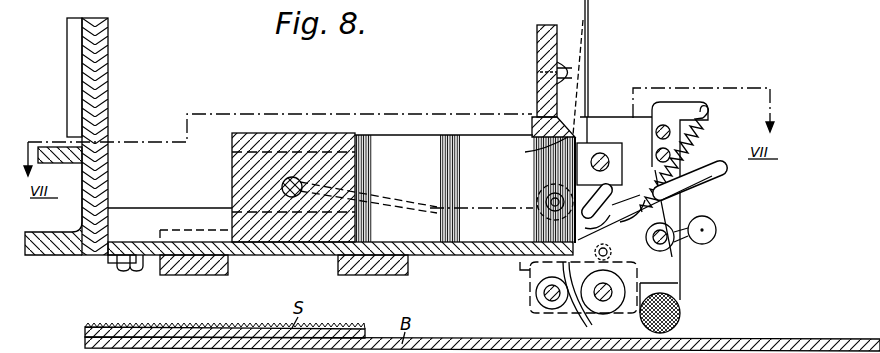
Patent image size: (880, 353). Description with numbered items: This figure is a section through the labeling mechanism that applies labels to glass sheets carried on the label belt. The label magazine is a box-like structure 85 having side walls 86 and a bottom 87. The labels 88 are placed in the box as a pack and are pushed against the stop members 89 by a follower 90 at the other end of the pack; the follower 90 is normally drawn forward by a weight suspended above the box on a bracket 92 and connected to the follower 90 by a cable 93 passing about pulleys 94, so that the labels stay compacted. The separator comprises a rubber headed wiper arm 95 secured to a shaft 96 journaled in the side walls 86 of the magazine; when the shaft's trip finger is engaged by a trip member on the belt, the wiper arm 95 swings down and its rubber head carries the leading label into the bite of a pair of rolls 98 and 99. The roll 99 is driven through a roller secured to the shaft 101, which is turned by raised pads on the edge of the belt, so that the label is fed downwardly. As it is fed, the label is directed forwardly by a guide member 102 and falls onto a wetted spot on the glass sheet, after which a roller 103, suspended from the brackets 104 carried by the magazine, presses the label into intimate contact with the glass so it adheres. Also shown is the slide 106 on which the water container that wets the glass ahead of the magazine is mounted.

The box-like structure 85 is at (121, 209).
The side walls 86 is at (181, 209).
The bottom 87 is at (287, 251).
The labels 88 is at (477, 150).
The stop members 89 is at (540, 152).
The follower 90 is at (292, 133).
The bracket 92 is at (540, 41).
The cable 93 is at (590, 17).
The pulleys 94 is at (540, 198).
The wiper arm 95 is at (614, 151).
The shaft 96 is at (649, 209).
The roll 98 is at (538, 282).
The roll 99 is at (583, 293).
The shaft 101 is at (605, 262).
The guide member 102 is at (585, 317).
The roller 103 is at (682, 320).
The brackets 104 is at (670, 294).
The slide 106 is at (88, 66).